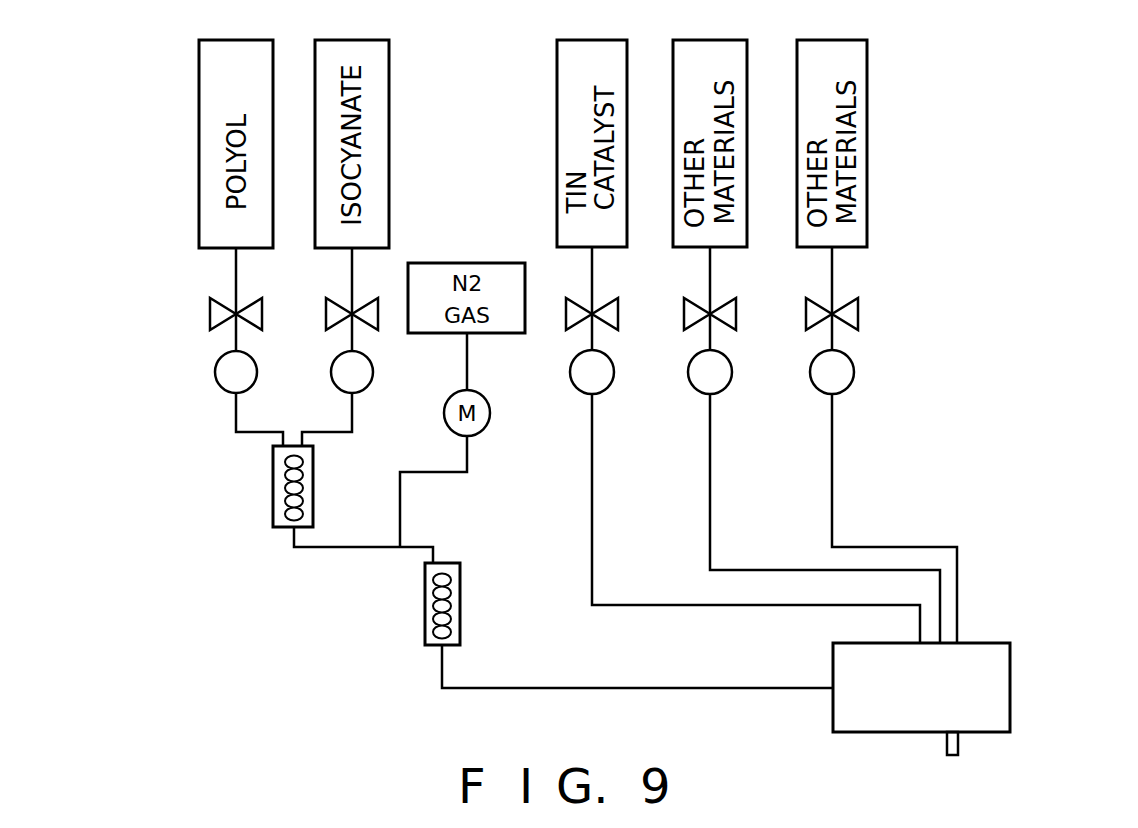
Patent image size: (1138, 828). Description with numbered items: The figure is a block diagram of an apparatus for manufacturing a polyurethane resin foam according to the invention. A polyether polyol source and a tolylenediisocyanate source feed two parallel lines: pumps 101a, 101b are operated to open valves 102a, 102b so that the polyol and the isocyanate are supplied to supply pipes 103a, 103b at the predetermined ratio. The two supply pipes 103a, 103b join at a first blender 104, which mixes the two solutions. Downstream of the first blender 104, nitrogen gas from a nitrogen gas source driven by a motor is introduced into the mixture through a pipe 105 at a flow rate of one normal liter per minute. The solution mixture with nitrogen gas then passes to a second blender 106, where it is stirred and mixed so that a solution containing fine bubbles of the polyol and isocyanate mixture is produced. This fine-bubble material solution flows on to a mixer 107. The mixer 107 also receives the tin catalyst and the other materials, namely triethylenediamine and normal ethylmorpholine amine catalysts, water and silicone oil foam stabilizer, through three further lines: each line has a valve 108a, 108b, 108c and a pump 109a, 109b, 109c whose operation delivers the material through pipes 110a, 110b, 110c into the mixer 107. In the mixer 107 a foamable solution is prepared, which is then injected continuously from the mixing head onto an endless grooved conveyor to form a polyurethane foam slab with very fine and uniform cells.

The pump 101a is at (216, 368).
The pump 101b is at (332, 369).
The valve 102a is at (210, 312).
The valve 102b is at (328, 312).
The supply pipe 103a is at (235, 422).
The supply pipe 103b is at (353, 410).
The first blender 104 is at (273, 492).
The pipe 105 is at (437, 473).
The second blender 106 is at (461, 630).
The mixer 107 is at (1011, 660).
The valve 108a is at (618, 312).
The valve 108b is at (736, 310).
The valve 108c is at (858, 308).
The pump 109a is at (580, 392).
The pump 109b is at (702, 392).
The pump 109c is at (854, 373).
The pipe 110a is at (592, 537).
The pipe 110b is at (710, 521).
The pipe 110c is at (833, 480).